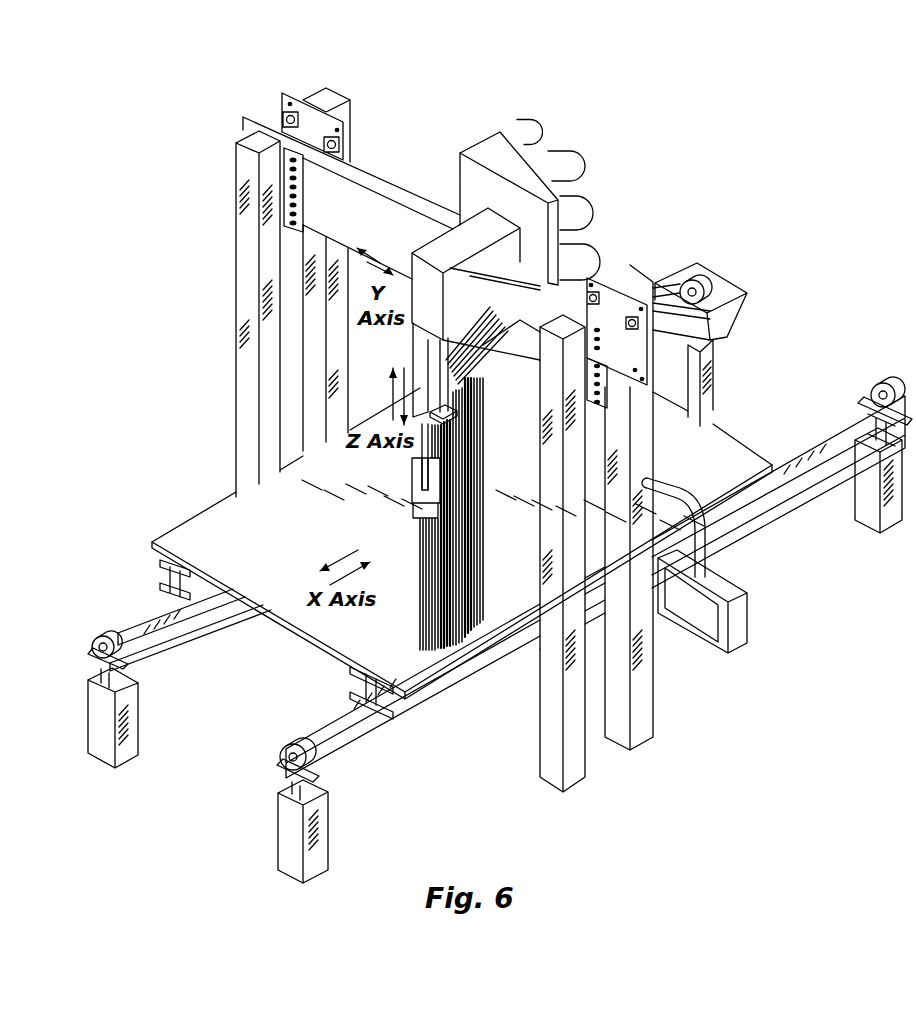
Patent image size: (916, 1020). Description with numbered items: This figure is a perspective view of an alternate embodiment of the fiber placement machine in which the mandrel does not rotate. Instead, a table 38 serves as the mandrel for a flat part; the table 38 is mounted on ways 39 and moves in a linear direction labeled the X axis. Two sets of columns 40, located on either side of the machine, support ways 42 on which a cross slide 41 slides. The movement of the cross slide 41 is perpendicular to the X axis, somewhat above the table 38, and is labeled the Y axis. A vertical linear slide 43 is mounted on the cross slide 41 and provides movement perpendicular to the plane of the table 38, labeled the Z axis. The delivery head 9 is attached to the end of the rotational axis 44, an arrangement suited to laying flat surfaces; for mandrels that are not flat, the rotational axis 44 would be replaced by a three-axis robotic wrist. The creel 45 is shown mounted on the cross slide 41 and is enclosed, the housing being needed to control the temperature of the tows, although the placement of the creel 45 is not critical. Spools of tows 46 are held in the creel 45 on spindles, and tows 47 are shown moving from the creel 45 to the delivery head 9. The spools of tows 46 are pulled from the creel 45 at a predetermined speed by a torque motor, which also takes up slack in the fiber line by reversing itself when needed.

The delivery head 9 is at (412, 505).
The table 38 is at (290, 630).
The ways 39 is at (333, 730).
The columns 40 is at (237, 257).
The cross slide 41 is at (455, 195).
The ways 42 is at (382, 176).
The vertical linear slide 43 is at (418, 357).
The rotational axis 44 is at (420, 420).
The creel 45 is at (490, 135).
The spools of tows 46 is at (528, 128).
The tows 47 is at (497, 333).